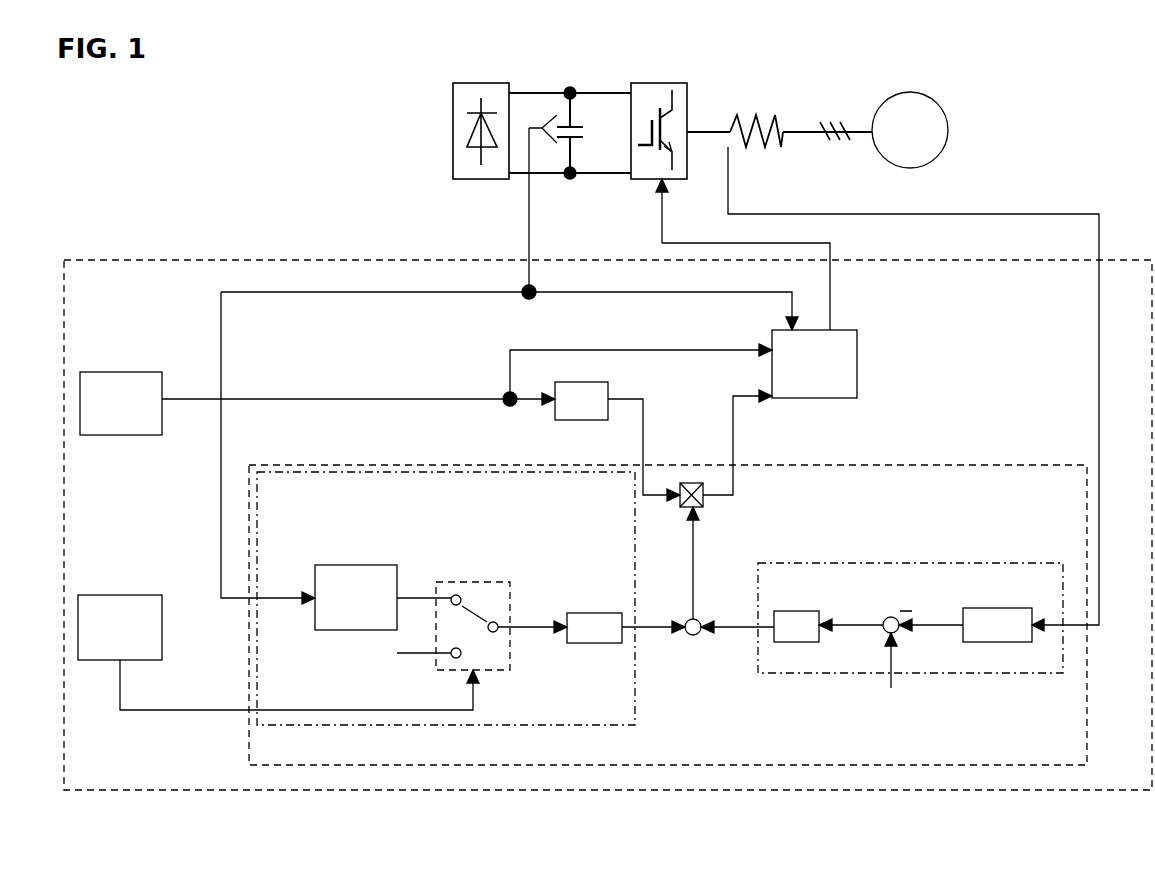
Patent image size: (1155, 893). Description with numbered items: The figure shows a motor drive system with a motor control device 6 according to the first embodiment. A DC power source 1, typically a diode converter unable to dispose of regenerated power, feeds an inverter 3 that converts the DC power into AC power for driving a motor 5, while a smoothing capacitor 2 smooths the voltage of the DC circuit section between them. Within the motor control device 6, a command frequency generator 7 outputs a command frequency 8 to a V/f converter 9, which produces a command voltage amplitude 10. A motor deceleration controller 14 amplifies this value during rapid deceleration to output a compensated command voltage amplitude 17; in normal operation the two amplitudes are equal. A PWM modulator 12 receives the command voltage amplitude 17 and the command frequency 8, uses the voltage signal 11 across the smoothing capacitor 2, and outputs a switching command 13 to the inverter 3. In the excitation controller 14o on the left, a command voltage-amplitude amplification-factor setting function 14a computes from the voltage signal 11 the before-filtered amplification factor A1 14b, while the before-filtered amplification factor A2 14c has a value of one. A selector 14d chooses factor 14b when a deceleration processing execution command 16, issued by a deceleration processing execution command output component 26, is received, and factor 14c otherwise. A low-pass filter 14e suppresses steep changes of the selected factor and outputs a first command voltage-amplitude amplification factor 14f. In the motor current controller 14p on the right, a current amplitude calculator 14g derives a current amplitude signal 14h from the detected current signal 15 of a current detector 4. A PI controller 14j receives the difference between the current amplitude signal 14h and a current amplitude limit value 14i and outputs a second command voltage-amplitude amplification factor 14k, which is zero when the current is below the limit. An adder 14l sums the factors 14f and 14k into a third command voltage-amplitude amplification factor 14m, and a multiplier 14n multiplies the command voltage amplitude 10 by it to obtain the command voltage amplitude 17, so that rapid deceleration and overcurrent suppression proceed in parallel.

The DC power source 1 is at (453, 115).
The smoothing capacitor 2 is at (583, 130).
The inverter 3 is at (687, 100).
The current detector 4 is at (752, 110).
The motor 5 is at (948, 125).
The motor control device 6 is at (345, 260).
The command frequency generator 7 is at (137, 372).
The command frequency 8 is at (380, 399).
The V/f converter 9 is at (555, 415).
The command voltage amplitude 10 is at (647, 432).
The voltage signal across the DC circuit section of the inverter 11 is at (529, 250).
The PWM modulator 12 is at (857, 385).
The switching command 13 is at (830, 310).
The motor deceleration controller 14 is at (930, 465).
The detected current signal 15 is at (1025, 214).
The deceleration processing execution command 16 is at (180, 710).
The command voltage amplitude 17 is at (735, 452).
The deceleration processing execution command output component 26 is at (102, 595).
The command voltage-amplitude amplification-factor setting function 14a is at (365, 565).
The before-filtered command voltage-amplitude amplification factor A1 14b is at (422, 598).
The before-filtered command voltage-amplitude amplification factor A2 14c is at (413, 655).
The selector 14d is at (495, 582).
The low-pass filter 14e is at (600, 613).
The first command voltage-amplitude amplification factor 14f is at (640, 627).
The current amplitude calculator 14g is at (985, 608).
The current amplitude signal 14h is at (933, 623).
The current amplitude limit value 14i is at (892, 665).
The PI controller 14j is at (795, 611).
The second command voltage-amplitude amplification factor 14k is at (733, 627).
The adder 14l is at (700, 635).
The third command voltage-amplitude amplification factor 14m is at (693, 582).
The multiplier 14n is at (683, 505).
The excitation controller 14o is at (540, 725).
The motor current controller 14p is at (880, 563).